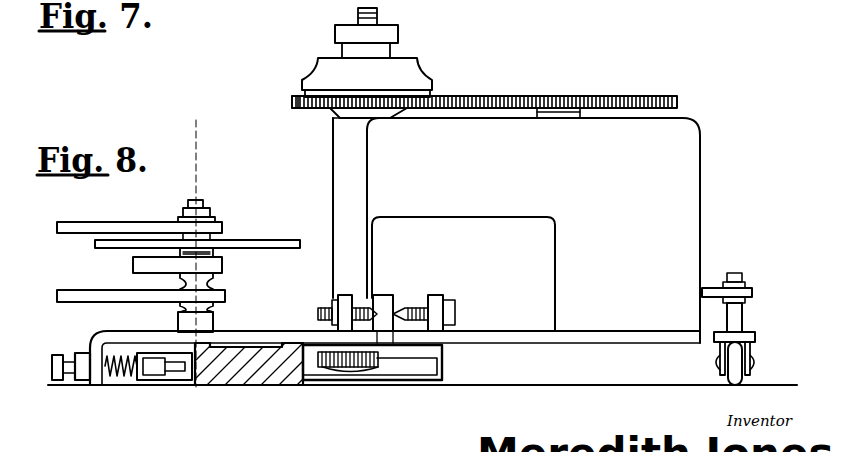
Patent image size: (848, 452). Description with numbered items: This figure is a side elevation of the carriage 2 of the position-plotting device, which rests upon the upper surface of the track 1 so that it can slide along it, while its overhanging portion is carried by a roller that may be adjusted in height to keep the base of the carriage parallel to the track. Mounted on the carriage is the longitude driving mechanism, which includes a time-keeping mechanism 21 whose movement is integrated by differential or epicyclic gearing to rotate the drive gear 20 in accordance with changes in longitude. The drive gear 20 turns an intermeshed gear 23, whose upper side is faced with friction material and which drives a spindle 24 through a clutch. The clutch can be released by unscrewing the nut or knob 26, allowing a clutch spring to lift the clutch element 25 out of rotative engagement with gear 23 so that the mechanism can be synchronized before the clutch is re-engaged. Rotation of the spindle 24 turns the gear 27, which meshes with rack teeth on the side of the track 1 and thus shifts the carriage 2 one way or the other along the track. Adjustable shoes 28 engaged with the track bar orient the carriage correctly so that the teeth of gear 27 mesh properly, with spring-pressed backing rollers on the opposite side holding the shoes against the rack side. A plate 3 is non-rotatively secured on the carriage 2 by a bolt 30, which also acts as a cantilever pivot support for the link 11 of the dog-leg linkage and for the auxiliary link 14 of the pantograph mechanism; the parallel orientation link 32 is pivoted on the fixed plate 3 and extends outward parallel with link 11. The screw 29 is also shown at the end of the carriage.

The track 1 is at (236, 372).
The carriage 2 is at (592, 335).
The plate 3 is at (246, 243).
The link 11 is at (74, 303).
The auxiliary link 14 is at (133, 263).
The drive gear 20 is at (490, 98).
The time-keeping mechanism 21 is at (463, 274).
The gear 23 is at (293, 101).
The spindle 24 is at (360, 14).
The clutch element 25 is at (403, 68).
The nut or knob 26 is at (384, 35).
The gear 27 is at (345, 368).
The adjustable shoes 28 is at (318, 378).
The adjusting screw 29 is at (56, 380).
The bolt 30 is at (208, 323).
The parallel orientation link 32 is at (88, 225).